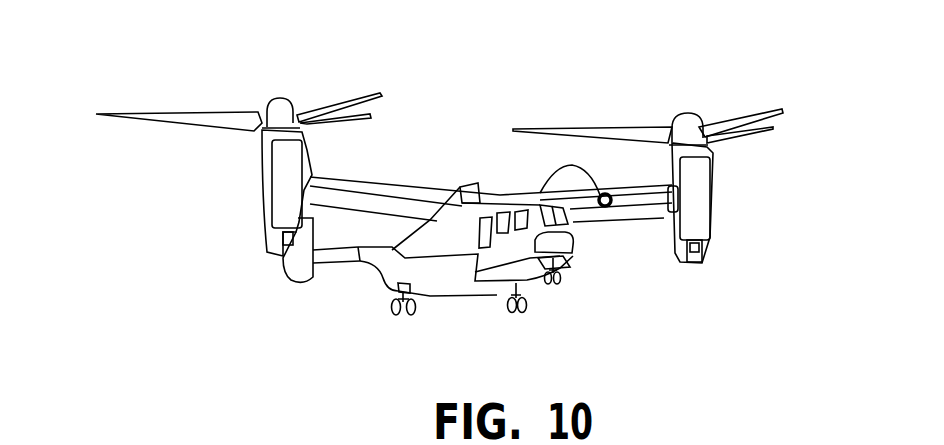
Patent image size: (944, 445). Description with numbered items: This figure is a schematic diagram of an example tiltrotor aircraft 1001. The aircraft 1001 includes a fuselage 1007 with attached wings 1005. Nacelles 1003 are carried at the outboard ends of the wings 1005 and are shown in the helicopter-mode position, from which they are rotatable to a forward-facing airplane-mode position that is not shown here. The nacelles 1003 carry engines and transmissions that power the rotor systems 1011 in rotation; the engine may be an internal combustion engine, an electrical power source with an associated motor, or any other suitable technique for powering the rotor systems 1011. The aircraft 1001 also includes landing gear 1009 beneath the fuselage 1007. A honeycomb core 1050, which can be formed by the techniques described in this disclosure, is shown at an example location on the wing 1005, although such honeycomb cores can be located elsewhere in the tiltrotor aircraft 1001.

The tiltrotor aircraft 1001 is at (522, 83).
The nacelles 1003 is at (252, 207).
The wings 1005 is at (377, 180).
The fuselage 1007 is at (577, 250).
The landing gear 1009 is at (397, 312).
The rotor systems 1011 is at (350, 97).
The honeycomb core 1050 is at (599, 192).